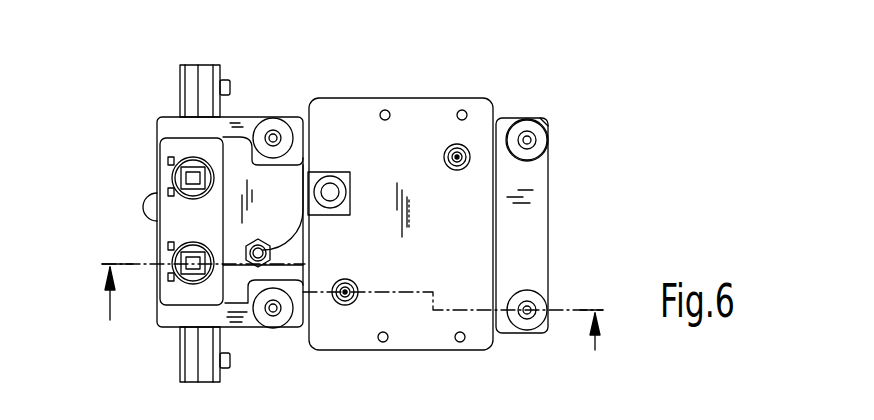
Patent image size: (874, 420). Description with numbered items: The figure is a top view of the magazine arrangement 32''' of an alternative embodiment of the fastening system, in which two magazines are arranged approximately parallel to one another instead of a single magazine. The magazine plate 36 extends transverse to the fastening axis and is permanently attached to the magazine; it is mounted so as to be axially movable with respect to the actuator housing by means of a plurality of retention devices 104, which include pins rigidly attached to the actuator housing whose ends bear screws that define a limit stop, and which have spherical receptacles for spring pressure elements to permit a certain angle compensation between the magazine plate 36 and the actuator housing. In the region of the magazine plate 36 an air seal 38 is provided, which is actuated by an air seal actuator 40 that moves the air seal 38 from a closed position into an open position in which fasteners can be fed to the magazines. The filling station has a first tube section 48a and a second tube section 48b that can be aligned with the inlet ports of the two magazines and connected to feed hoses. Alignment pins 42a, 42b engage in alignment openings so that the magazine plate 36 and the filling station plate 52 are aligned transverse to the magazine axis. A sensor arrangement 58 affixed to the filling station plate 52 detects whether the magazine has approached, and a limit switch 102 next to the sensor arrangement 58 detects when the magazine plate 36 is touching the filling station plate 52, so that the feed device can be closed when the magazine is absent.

The magazine arrangement 32''' is at (385, 191).
The magazine plate 36 is at (527, 250).
The air seal 38 is at (175, 95).
The air seal actuator 40 is at (205, 354).
The alignment pin 42a is at (337, 302).
The alignment pin 42b is at (463, 150).
The first tube section 48a is at (193, 168).
The second tube section 48b is at (190, 253).
The filling station plate 52 is at (403, 132).
The sensor arrangement 58 is at (301, 117).
The limit switch 102 is at (330, 190).
The retention device 104 is at (540, 140).